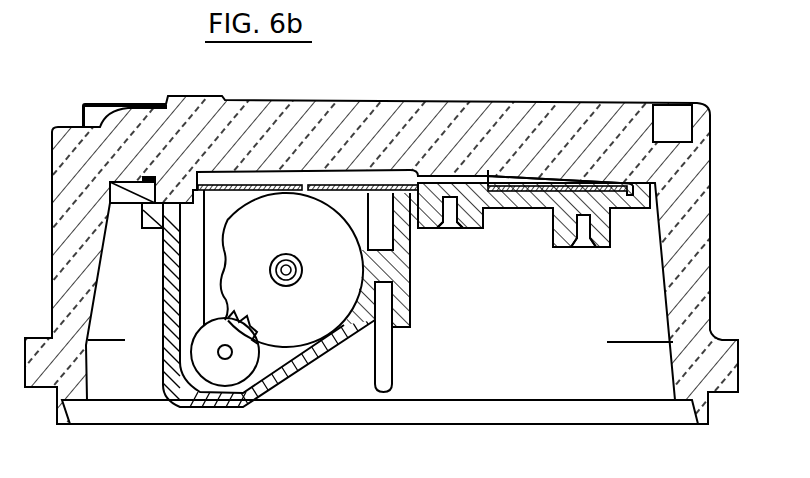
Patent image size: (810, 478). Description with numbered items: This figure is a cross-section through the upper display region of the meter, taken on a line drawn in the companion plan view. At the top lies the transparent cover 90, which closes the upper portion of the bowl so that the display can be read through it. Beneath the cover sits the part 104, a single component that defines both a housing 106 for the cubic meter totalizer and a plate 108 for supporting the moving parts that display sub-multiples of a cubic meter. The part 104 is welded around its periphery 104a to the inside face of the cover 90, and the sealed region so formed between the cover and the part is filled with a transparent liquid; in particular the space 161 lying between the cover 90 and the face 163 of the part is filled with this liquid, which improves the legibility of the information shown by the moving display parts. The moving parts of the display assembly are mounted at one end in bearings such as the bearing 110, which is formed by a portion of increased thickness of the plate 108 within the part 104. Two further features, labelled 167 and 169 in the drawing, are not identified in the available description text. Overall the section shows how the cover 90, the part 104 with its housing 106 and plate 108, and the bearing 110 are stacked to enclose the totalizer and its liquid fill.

The transparent cover 90 is at (392, 101).
The part 104 is at (295, 372).
The periphery 104a is at (120, 182).
The housing 106 is at (207, 278).
The plate 108 is at (513, 195).
The bearing 110 is at (583, 227).
The space 161 is at (343, 185).
The face 163 is at (560, 181).
The plate segment 167 is at (282, 186).
The screw 169 is at (440, 183).